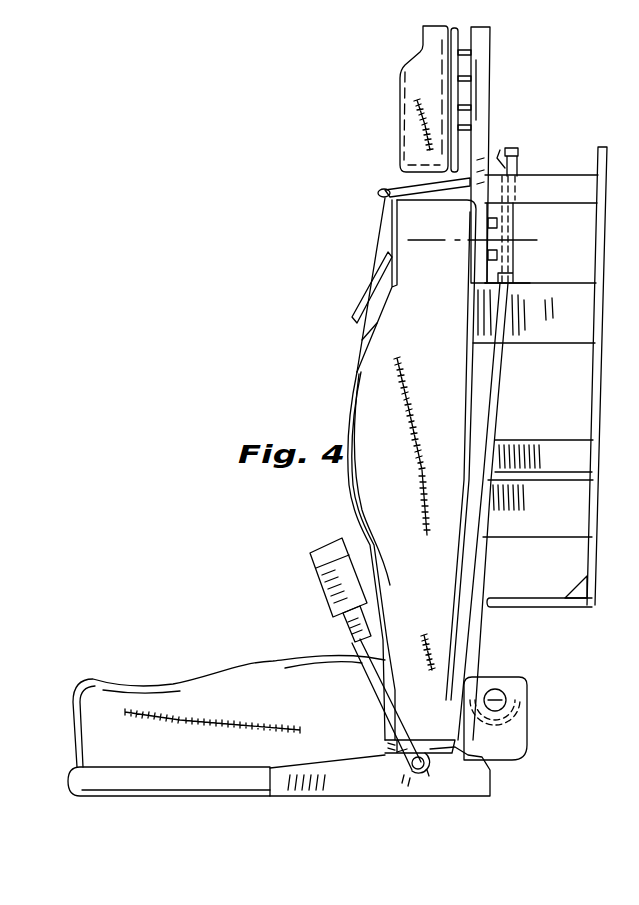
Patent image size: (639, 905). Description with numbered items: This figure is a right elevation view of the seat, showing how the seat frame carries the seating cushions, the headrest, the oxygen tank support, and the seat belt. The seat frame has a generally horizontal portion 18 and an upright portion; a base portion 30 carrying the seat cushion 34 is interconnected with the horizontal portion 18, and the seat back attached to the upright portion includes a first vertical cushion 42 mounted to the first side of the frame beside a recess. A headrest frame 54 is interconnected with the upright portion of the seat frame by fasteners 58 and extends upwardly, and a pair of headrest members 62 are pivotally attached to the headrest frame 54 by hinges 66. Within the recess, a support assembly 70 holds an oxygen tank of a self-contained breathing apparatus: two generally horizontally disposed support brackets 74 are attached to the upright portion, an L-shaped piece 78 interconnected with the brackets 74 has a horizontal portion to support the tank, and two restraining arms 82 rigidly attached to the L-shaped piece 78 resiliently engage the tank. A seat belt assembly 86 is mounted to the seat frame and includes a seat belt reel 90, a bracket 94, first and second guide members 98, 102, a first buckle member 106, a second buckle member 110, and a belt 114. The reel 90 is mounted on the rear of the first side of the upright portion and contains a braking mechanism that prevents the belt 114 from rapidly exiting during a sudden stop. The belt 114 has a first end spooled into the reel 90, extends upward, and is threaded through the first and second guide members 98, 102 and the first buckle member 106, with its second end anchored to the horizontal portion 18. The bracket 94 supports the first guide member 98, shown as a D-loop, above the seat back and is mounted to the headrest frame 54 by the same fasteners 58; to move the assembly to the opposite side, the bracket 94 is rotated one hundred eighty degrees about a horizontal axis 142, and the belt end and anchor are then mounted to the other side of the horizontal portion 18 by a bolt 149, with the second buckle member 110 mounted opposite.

The horizontal portion 18 is at (320, 777).
The base portion 30 is at (200, 783).
The seat cushion 34 is at (95, 685).
The first vertical cushion 42 is at (458, 377).
The headrest frame 54 is at (489, 33).
The fasteners 58 is at (513, 257).
The headrest members 62 is at (420, 58).
The hinges 66 is at (463, 68).
The support assembly 70 is at (615, 166).
The support brackets 74 is at (569, 332).
The L-shaped piece 78 is at (537, 608).
The restraining arms 82 is at (565, 182).
The seat belt assembly 86 is at (538, 134).
The seat belt reel 90 is at (520, 700).
The bracket 94 is at (517, 277).
The first guide member 98 is at (490, 150).
The second guide member 102 is at (378, 193).
The first buckle member 106 is at (360, 303).
The second buckle member 110 is at (318, 583).
The belt 114 is at (480, 654).
The horizontal axis 142 is at (427, 242).
The bolt 149 is at (416, 773).